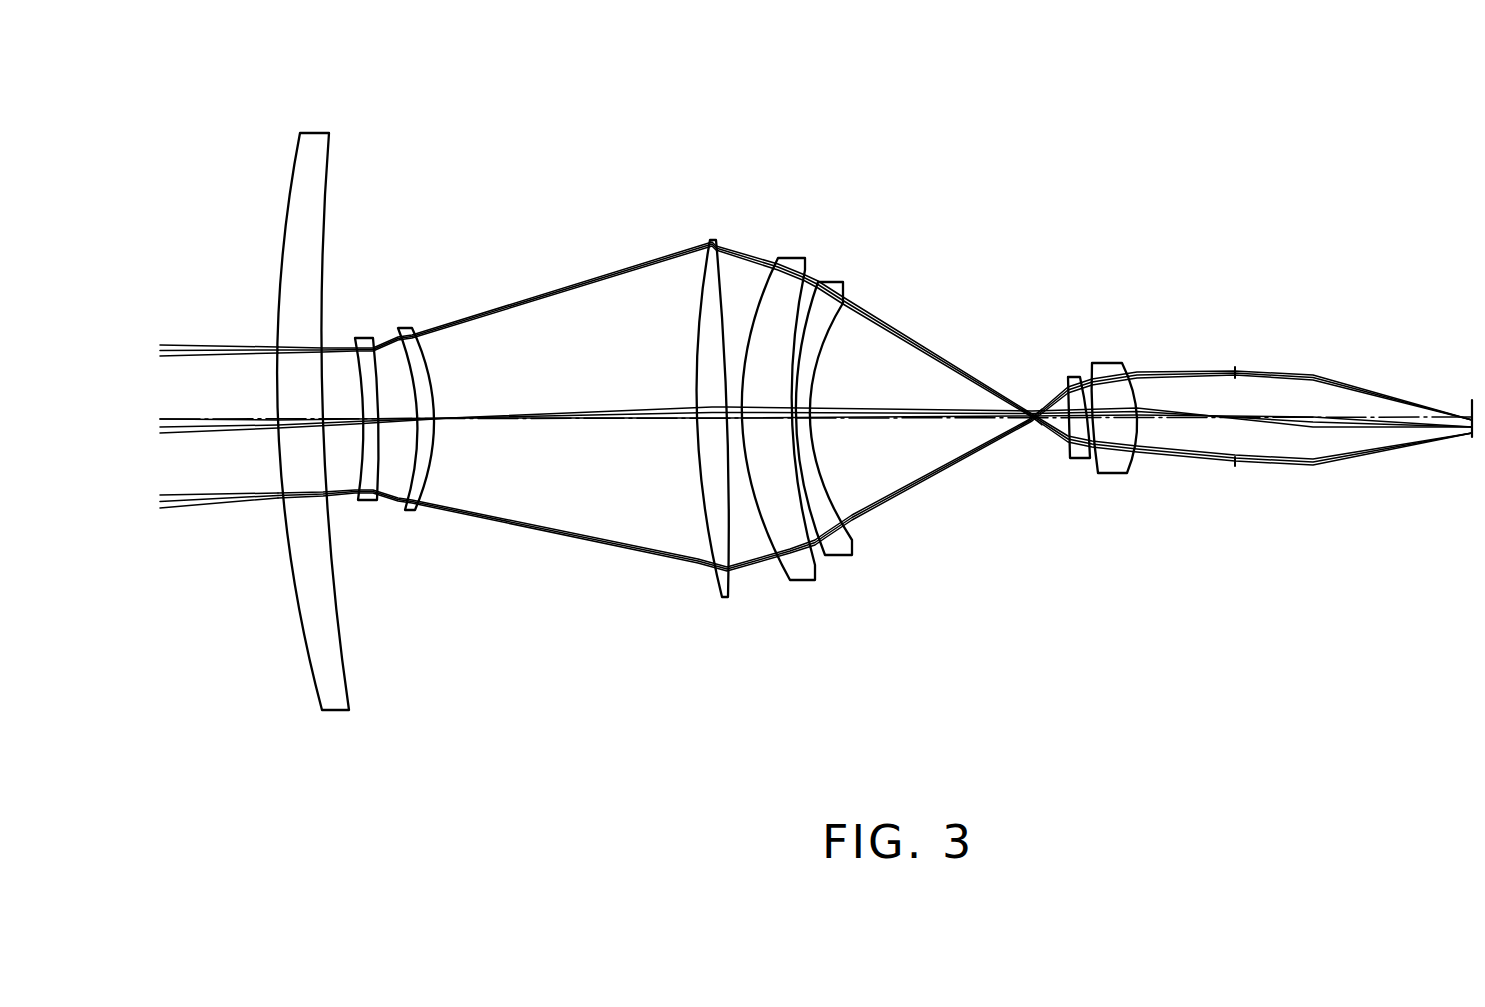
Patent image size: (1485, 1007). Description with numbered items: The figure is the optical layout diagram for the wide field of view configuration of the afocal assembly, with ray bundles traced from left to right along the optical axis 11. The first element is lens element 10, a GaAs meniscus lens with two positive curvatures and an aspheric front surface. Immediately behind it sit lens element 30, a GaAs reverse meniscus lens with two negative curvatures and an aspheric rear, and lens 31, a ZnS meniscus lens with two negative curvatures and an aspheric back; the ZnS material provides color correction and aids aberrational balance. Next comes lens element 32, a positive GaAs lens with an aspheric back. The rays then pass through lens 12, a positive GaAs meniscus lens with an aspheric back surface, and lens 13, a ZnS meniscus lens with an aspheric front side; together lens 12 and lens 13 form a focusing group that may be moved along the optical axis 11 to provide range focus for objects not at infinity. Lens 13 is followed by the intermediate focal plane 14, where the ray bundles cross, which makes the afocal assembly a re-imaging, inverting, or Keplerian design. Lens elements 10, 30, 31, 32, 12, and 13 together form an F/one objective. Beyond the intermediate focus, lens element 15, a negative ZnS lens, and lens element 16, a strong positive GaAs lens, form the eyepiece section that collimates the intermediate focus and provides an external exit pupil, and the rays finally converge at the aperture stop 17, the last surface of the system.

The lens element 10 is at (380, 378).
The optical axis 11 is at (219, 366).
The lens 12 is at (778, 354).
The lens 13 is at (854, 342).
The intermediate focal plane 14 is at (1007, 521).
The lens element 15 is at (1061, 367).
The lens element 16 is at (1130, 348).
The aperture stop 17 is at (1471, 516).
The lens element 30 is at (383, 484).
The lens 31 is at (459, 507).
The lens element 32 is at (689, 360).